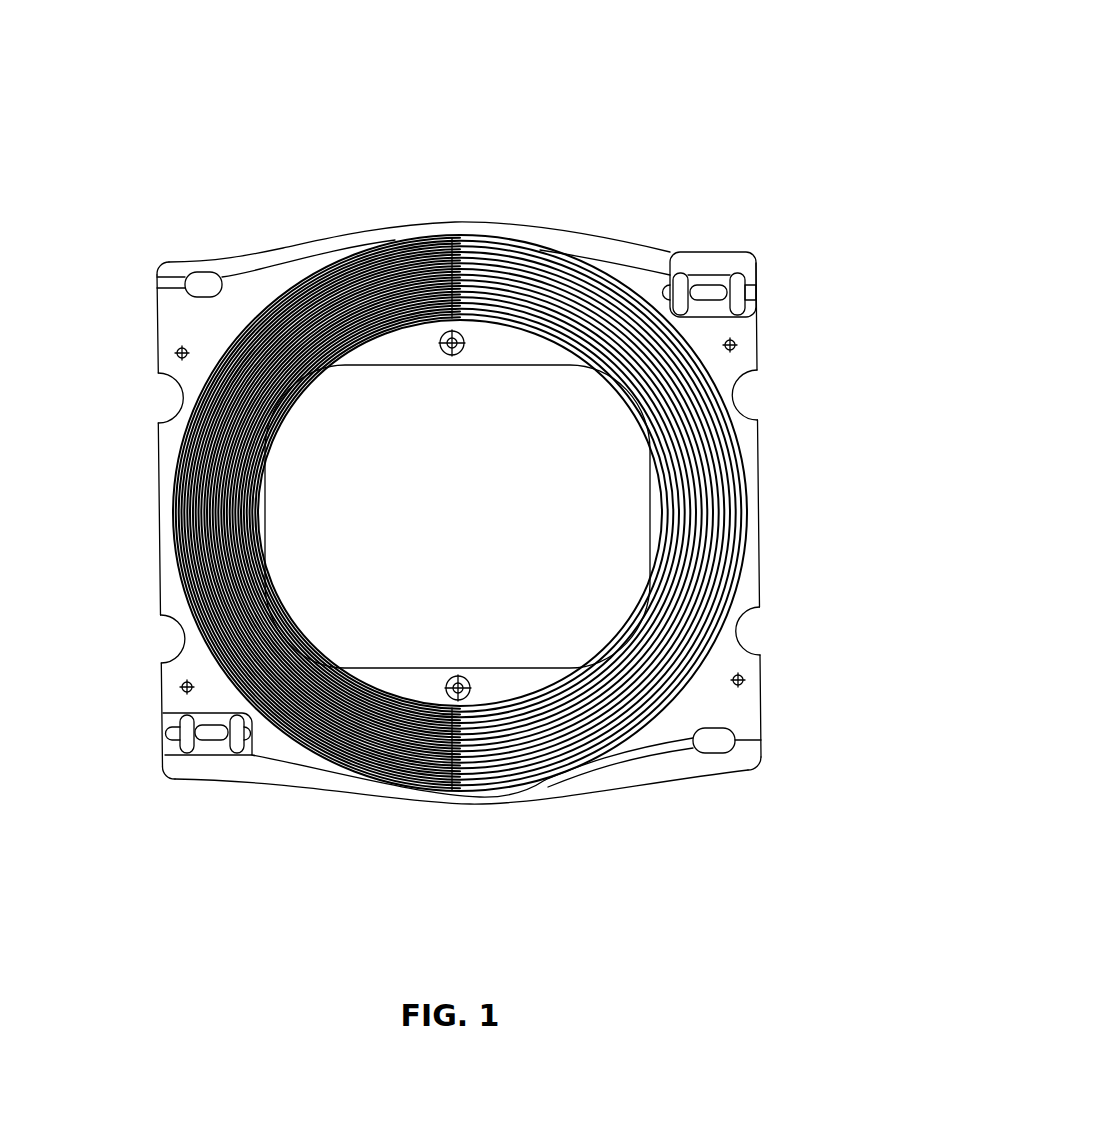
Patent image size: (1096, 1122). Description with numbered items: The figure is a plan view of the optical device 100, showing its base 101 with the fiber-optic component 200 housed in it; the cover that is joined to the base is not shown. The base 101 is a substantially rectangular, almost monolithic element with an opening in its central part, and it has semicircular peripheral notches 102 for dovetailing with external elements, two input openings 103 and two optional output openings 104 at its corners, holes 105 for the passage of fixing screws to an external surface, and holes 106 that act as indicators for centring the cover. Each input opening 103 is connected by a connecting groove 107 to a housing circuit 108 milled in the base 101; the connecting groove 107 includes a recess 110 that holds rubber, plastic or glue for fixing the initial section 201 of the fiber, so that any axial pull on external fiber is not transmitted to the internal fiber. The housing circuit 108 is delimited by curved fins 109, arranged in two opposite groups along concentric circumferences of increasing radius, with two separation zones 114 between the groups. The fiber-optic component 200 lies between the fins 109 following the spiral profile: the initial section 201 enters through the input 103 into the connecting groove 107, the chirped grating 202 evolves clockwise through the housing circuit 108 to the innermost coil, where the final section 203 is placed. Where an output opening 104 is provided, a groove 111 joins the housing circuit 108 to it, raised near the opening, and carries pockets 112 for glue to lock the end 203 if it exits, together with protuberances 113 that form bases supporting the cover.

The optical device 100 is at (510, 86).
The base 101 is at (766, 528).
The semicircular peripheral notches 102 is at (180, 398).
The input openings 103 is at (156, 268).
The output openings 104 is at (758, 272).
The holes 105 is at (176, 352).
The holes 106 is at (450, 357).
The connecting groove 107 is at (272, 272).
The housing circuit 108 is at (500, 240).
The curved fins 109 is at (422, 240).
The recess 110 is at (207, 271).
The groove 111 is at (645, 273).
The pockets 112 is at (734, 270).
The protuberances 113 is at (674, 252).
The separation zones 114 is at (564, 308).
The fiber-optic component 200 is at (764, 742).
The initial section 201 is at (683, 742).
The chirped grating 202 is at (180, 508).
The final section 203 is at (660, 464).